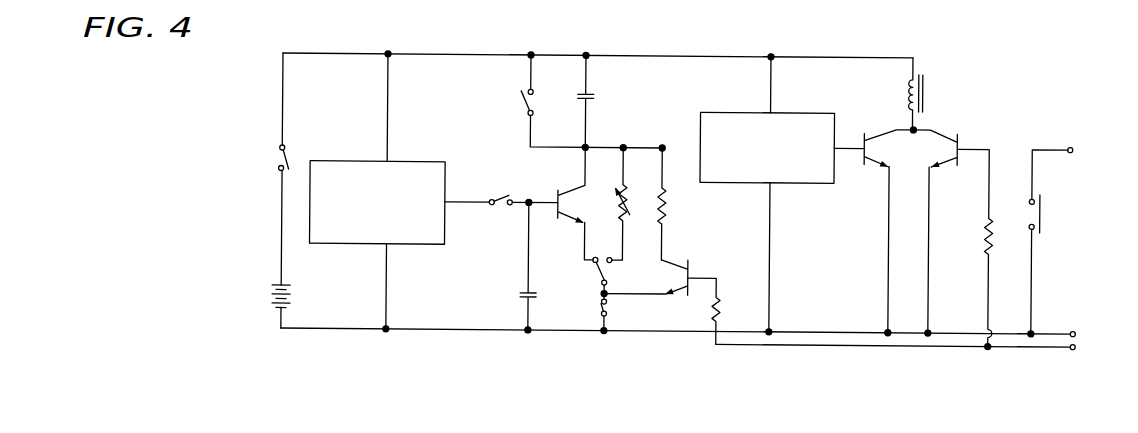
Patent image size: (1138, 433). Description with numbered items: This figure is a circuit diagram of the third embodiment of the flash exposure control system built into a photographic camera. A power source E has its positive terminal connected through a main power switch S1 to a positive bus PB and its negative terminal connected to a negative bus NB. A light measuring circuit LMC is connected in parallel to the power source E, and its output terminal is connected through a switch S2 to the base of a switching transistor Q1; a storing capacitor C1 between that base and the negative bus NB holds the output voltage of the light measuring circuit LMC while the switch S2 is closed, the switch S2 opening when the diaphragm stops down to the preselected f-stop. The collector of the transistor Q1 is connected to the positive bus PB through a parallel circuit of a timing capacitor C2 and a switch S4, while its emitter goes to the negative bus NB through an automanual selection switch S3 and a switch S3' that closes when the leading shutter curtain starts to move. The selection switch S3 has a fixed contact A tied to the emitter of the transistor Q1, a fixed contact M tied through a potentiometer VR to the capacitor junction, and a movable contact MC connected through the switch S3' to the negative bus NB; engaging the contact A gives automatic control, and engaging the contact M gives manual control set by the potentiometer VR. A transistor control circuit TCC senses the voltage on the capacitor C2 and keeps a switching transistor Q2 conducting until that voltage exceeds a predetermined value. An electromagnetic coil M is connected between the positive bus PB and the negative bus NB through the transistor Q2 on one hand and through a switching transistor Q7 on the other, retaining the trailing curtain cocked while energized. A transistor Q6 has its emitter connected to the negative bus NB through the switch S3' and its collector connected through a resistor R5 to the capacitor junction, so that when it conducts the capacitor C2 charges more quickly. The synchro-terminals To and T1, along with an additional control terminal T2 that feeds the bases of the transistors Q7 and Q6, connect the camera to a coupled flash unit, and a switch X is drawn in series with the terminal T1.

The main power switch S1 is at (281, 160).
The light measuring circuit LMC is at (355, 160).
The power source E is at (274, 293).
The negative bus NB is at (421, 328).
The positive bus PB is at (698, 54).
The switch S4 is at (522, 95).
The timing capacitor C2 is at (596, 94).
The switch S2 is at (493, 198).
The storing capacitor C1 is at (521, 293).
The switching transistor Q1 is at (578, 186).
The potentiometer VR is at (627, 198).
The resistor R5 is at (668, 204).
The fixed contact A is at (594, 259).
The automanual selection switch S3 is at (630, 277).
The movable contact MC is at (603, 278).
The switch S3' is at (636, 313).
The transistor Q6 is at (690, 264).
The transistor control circuit TCC is at (790, 109).
The electromagnetic coil M is at (926, 90).
The switching transistor Q2 is at (877, 166).
The switching transistor Q7 is at (938, 166).
The synchro-terminal T1 is at (1074, 169).
The switch X is at (1043, 212).
The synchro-terminal To is at (1078, 333).
The control terminal T2 is at (1080, 346).